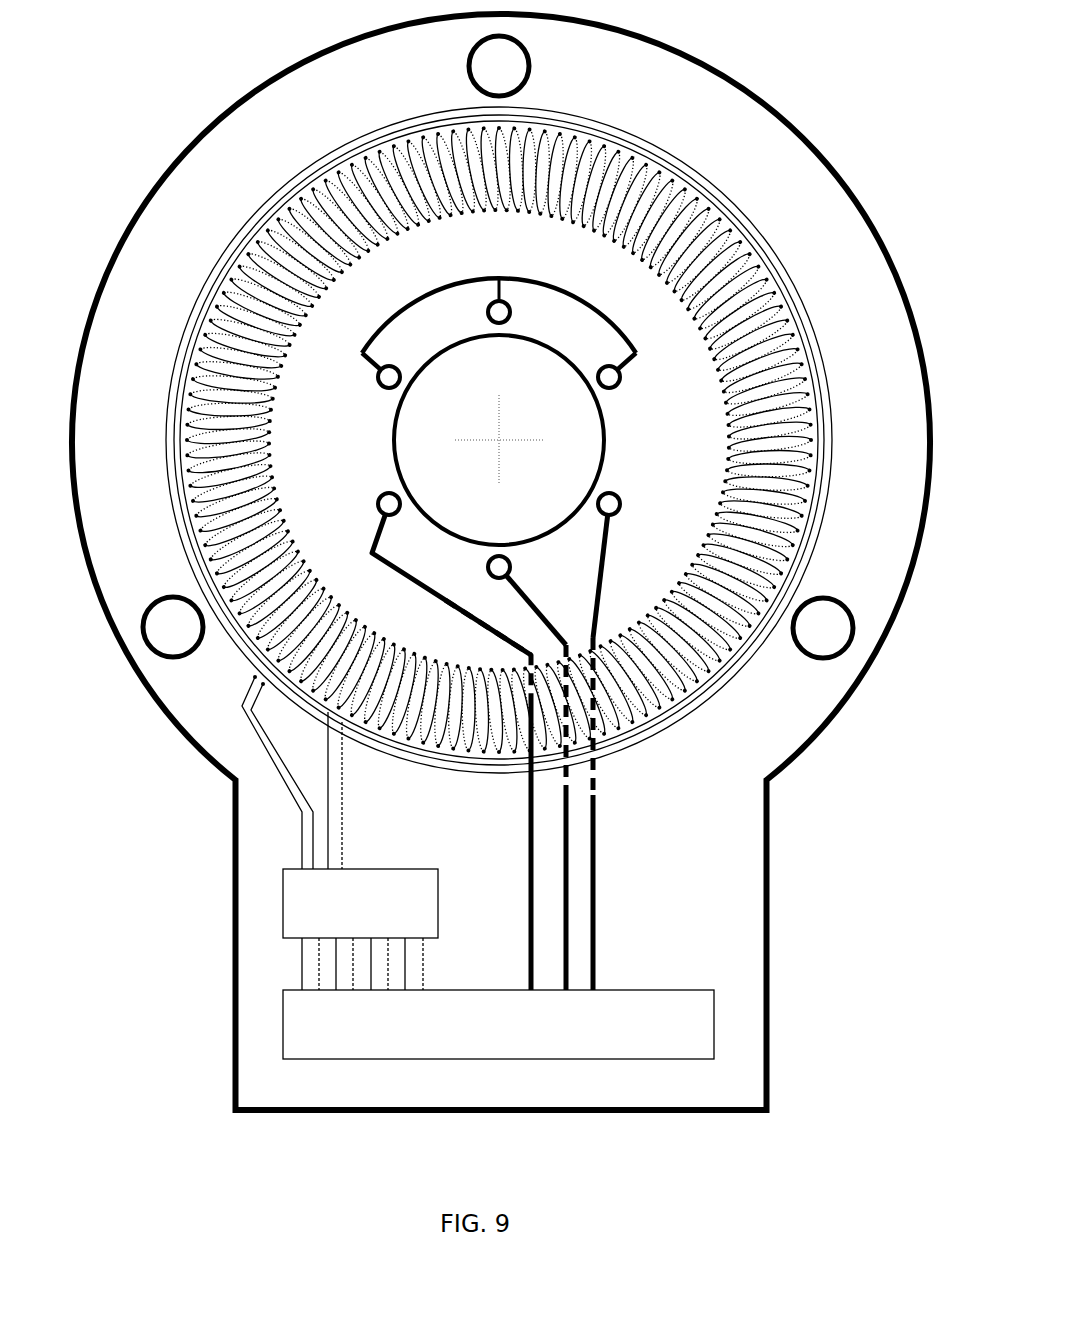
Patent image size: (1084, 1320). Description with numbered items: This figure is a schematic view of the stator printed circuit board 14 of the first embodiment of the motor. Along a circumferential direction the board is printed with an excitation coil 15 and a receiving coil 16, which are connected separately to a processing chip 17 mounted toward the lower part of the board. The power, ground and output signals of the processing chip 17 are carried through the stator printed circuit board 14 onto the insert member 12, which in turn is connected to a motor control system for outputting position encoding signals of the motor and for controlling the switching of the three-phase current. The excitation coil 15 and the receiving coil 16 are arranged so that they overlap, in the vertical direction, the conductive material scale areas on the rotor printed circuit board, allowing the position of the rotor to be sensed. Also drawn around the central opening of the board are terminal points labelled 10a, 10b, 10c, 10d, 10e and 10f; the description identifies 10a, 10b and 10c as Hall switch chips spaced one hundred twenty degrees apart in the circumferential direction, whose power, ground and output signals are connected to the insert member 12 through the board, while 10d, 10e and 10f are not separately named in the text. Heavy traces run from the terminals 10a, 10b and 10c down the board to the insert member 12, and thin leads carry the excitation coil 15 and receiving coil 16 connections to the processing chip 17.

The stator printed circuit board 14 is at (158, 152).
The excitation coil 15 is at (240, 692).
The receiving coil 16 is at (346, 762).
The processing chip 17 is at (293, 900).
The insert member 12 is at (303, 1029).
The Hall switch chip 10a is at (434, 741).
The Hall switch chip 10b is at (506, 773).
The Hall switch chip 10c is at (628, 741).
The terminal 10d is at (632, 380).
The terminal 10e is at (521, 301).
The terminal 10f is at (369, 380).